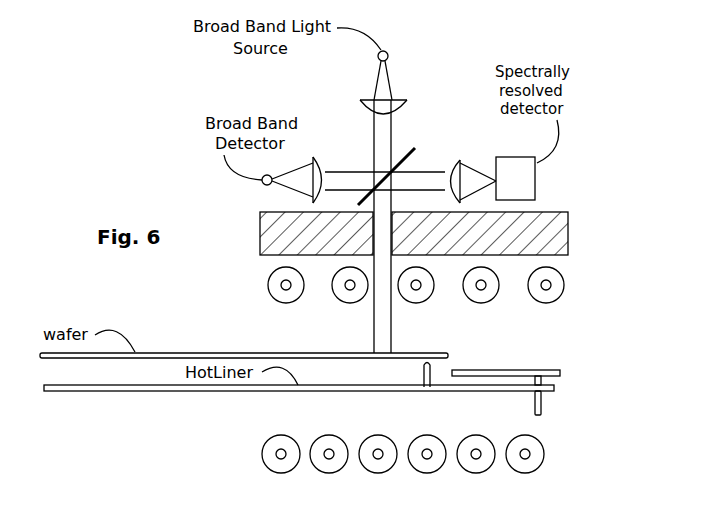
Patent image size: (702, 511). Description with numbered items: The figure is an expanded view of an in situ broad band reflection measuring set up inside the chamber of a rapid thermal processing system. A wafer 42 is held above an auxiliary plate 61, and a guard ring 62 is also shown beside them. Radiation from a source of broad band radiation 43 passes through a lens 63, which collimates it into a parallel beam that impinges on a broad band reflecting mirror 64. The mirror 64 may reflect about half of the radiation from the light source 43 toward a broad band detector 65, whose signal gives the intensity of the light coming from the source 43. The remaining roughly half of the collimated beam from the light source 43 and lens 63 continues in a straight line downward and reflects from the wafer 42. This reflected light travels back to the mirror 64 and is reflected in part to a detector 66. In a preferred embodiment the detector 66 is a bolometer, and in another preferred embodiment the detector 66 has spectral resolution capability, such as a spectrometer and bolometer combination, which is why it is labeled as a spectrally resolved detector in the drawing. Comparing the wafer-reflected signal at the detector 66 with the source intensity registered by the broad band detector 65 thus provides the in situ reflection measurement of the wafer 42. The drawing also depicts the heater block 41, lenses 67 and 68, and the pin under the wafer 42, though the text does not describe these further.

The source of broad band radiation 43 is at (388, 52).
The lens 63 is at (367, 113).
The broad band reflecting mirror 64 is at (423, 152).
The broad band detector 65 is at (263, 185).
The lens 68 is at (319, 158).
The lens 67 is at (455, 160).
The detector 66 is at (537, 193).
The heater block 41 is at (267, 256).
The auxiliary plate 61 is at (112, 385).
The wafer 42 is at (428, 360).
The guard ring 62 is at (495, 370).